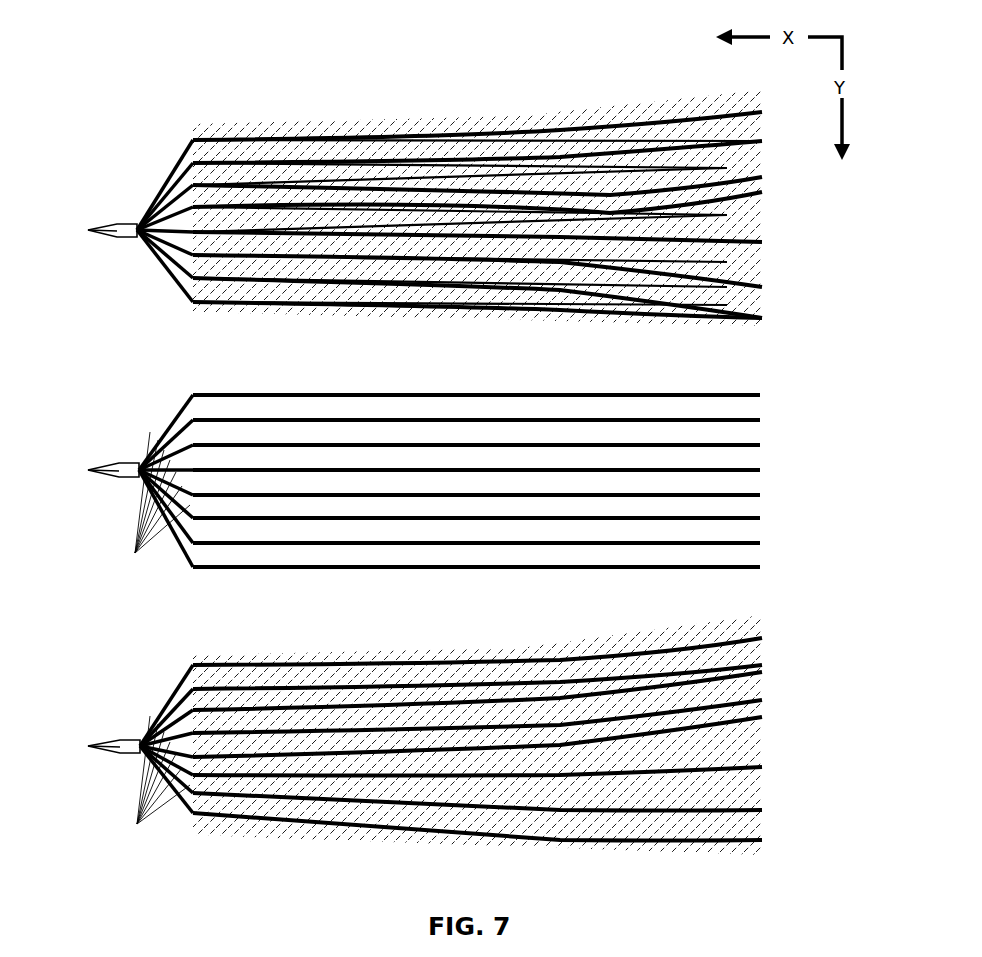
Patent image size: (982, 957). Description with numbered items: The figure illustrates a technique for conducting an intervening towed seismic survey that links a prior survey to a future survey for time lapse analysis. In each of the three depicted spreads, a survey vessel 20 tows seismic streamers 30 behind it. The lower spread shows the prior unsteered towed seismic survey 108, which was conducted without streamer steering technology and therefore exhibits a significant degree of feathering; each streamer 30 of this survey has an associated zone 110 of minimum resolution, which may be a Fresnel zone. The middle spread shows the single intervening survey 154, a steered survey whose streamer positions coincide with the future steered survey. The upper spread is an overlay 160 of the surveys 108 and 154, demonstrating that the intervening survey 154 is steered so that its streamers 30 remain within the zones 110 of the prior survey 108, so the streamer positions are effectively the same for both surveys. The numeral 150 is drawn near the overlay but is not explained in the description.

The survey vessel 20 is at (123, 221).
The seismic streamers 30 is at (135, 553).
The unsteered towed seismic survey 108 is at (126, 669).
The zone 110 is at (764, 108).
The reinforcement layer 150 is at (78, 304).
The intervening survey 154 is at (130, 400).
The overlay 160 is at (110, 117).